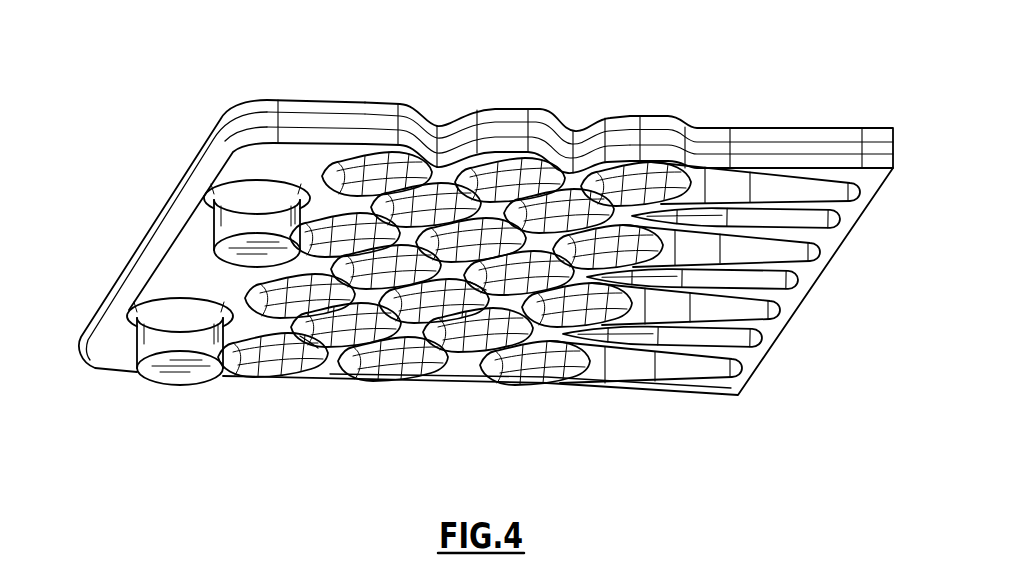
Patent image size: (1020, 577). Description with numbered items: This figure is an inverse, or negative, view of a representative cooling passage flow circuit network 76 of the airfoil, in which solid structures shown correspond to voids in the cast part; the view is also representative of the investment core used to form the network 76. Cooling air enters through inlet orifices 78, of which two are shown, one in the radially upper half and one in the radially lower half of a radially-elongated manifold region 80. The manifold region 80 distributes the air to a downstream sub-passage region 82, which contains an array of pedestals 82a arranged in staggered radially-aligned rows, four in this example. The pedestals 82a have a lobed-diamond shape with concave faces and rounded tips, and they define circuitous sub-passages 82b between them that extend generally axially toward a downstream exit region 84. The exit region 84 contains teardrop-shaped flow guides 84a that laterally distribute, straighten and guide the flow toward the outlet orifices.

The cooling passage flow circuit network 76 is at (97, 404).
The inlet orifice 78 is at (227, 247).
The manifold region 80 is at (260, 70).
The sub-passage region 82 is at (367, 74).
The pedestal 82a is at (337, 322).
The sub-passage 82b is at (303, 340).
The exit region 84 is at (627, 88).
The flow guide 84a is at (540, 367).